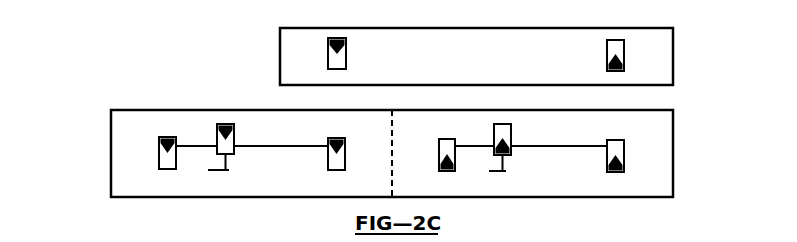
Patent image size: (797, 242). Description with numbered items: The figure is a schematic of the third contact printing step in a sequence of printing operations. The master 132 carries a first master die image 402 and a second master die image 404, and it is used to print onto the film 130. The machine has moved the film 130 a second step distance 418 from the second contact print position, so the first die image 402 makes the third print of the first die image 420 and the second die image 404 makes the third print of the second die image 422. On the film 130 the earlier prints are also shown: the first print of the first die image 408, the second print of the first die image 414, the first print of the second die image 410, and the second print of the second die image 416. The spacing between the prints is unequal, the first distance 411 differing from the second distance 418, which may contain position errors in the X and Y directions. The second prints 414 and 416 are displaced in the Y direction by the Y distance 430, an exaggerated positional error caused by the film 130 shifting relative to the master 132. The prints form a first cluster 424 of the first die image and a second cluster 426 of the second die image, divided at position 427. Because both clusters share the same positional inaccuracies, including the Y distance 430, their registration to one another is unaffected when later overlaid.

The film 130 is at (111, 142).
The master 132 is at (280, 45).
The first master die image 402 is at (328, 50).
The second master die image 404 is at (607, 50).
The first print of the first die image 408 is at (159, 145).
The first print of the second die image 410 is at (439, 150).
The first distance 411 is at (196, 144).
The second print of the first die image 414 is at (234, 140).
The second print of the second die image 416 is at (511, 144).
The second step distance 418 is at (296, 145).
The third print of the first die image 420 is at (345, 157).
The third print of the second die image 422 is at (624, 160).
The first cluster of prints of the first die image 424 is at (292, 110).
The second cluster of prints of the second die image 426 is at (580, 110).
The division position 427 is at (393, 147).
The Y distance 430 is at (212, 163).